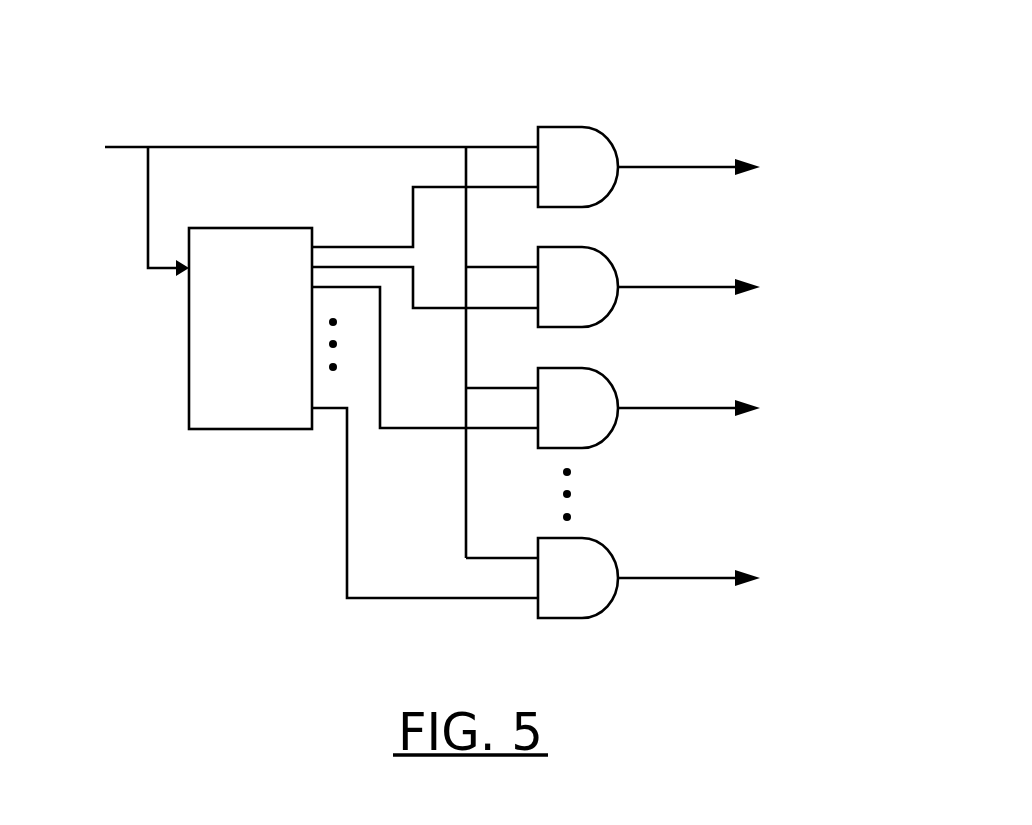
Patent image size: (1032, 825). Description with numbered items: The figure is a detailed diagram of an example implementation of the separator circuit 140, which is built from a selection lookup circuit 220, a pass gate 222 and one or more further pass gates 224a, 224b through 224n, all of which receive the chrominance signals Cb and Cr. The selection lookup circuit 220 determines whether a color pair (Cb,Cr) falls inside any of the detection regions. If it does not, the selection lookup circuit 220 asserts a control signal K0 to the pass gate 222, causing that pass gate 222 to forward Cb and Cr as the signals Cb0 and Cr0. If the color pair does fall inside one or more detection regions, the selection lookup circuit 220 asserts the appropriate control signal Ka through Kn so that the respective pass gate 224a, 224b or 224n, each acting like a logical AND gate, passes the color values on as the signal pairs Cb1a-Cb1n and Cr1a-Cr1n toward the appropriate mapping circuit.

The separator circuit 140 is at (198, 47).
The selection lookup circuit 220 is at (258, 225).
The pass gate 222 is at (570, 125).
The pass gate 224a is at (570, 247).
The pass gate 224b is at (570, 368).
The pass gate 224n is at (570, 538).